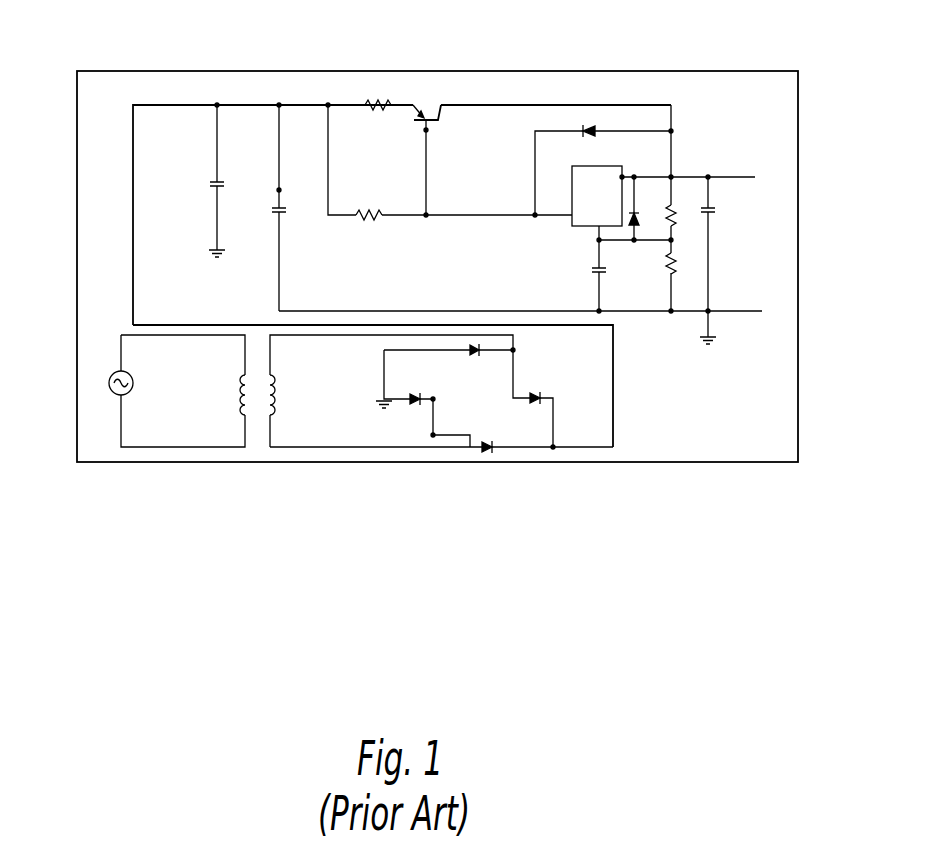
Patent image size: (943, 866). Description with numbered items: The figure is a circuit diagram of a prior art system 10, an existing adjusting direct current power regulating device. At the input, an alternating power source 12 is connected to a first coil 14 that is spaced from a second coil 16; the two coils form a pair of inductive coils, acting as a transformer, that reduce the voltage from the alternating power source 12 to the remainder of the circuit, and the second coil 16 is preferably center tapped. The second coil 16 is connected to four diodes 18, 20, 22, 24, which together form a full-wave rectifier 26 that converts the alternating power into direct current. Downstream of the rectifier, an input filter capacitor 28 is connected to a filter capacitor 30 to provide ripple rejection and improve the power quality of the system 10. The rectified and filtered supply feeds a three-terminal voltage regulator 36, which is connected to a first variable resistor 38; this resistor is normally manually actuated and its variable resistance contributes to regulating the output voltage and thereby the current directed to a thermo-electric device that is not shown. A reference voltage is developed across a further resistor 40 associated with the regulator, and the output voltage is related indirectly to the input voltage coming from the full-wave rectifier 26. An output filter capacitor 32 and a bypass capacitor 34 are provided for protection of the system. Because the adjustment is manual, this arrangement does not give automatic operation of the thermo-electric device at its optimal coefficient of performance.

The prior art system 10 is at (320, 508).
The alternating power source 12 is at (126, 390).
The first coil 14 is at (244, 405).
The second coil 16 is at (287, 413).
The diode 18 is at (415, 405).
The diode 20 is at (490, 452).
The diode 22 is at (478, 353).
The diode 24 is at (543, 404).
The full-wave rectifier 26 is at (492, 548).
The input filter capacitor 28 is at (212, 193).
The filter capacitor 30 is at (275, 188).
The output filter capacitor 32 is at (720, 208).
The bypass capacitor 34 is at (605, 278).
The three-terminal voltage regulator 36 is at (632, 186).
The first variable resistor 38 is at (680, 273).
The resistor R4 40 is at (680, 215).